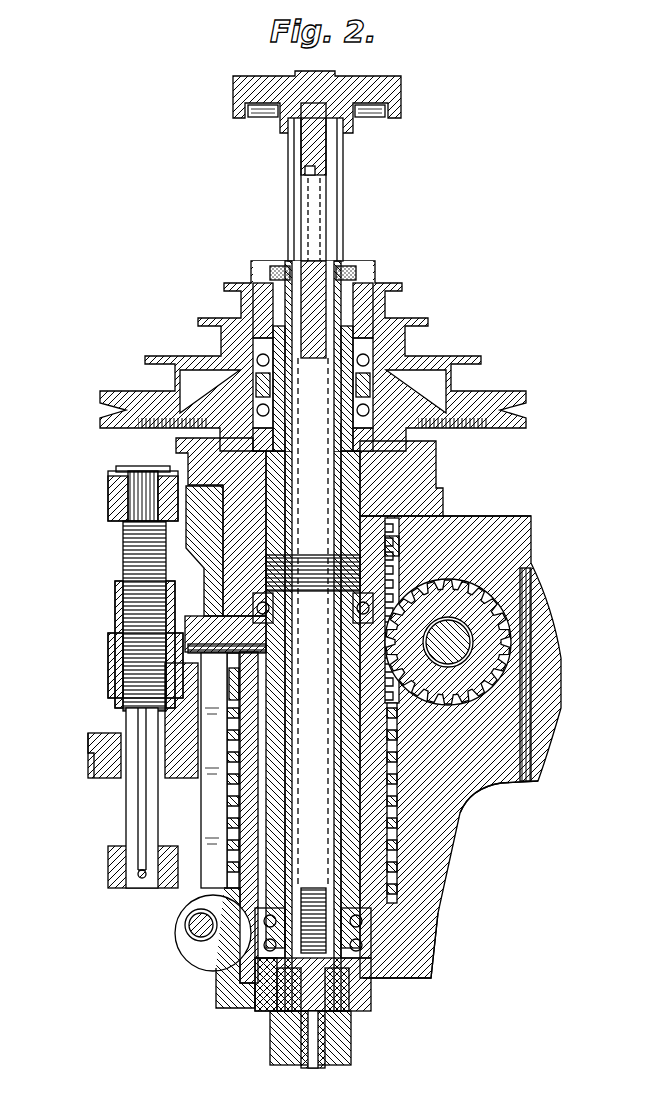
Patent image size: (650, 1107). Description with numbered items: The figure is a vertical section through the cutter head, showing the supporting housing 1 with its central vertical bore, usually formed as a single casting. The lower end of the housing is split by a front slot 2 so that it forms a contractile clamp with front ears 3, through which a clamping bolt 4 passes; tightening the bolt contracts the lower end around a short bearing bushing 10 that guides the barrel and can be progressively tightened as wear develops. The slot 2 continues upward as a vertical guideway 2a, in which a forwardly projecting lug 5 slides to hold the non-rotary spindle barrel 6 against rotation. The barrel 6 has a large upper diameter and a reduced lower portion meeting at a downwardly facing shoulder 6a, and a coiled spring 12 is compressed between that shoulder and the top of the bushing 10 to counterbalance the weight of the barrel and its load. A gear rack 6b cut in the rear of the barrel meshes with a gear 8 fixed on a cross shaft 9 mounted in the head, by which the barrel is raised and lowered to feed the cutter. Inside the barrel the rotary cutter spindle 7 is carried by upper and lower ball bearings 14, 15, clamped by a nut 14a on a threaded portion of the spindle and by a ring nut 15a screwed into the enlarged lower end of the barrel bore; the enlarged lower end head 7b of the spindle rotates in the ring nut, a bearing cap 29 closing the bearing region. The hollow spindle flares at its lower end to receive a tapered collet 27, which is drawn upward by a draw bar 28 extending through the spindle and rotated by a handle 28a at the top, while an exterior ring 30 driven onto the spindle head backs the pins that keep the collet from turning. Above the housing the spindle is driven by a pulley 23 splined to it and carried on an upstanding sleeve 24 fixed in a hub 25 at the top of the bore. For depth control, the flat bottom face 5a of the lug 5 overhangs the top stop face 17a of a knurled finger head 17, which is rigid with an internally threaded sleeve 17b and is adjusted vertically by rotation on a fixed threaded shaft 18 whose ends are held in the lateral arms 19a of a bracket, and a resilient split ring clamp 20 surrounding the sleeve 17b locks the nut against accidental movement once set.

The supporting housing 1 is at (452, 815).
The front slot 2 is at (208, 958).
The vertical guideway 2a is at (205, 792).
The front ears 3 is at (182, 920).
The clamping bolt 4 is at (188, 930).
The lug 5 is at (178, 603).
The abutment stop face 5a is at (200, 660).
The spindle barrel 6 is at (240, 820).
The annular shoulder 6a is at (492, 777).
The gear rack 6b is at (385, 538).
The rotary cutter spindle 7 is at (334, 198).
The lower end head 7b is at (268, 1022).
The gear 8 is at (470, 658).
The cross shaft 9 is at (448, 652).
The bearing bushing 10 is at (395, 908).
The coiled spring 12 is at (390, 738).
The upper ball bearings 14 is at (256, 610).
The nut 14a is at (440, 513).
The lower ball bearings 15 is at (362, 936).
The ring nut 15a is at (365, 1000).
The stop member 17 is at (95, 770).
The top abutment stop face 17a is at (92, 724).
The internally threaded sleeve 17b is at (108, 592).
The threaded shaft 18 is at (126, 794).
The lateral arms 19a is at (108, 502).
The split ring clamp 20 is at (100, 648).
The drive pulley 23 is at (462, 384).
The upstanding sleeve 24 is at (338, 396).
The hub 25 is at (420, 459).
The collet 27 is at (320, 1062).
The draw bar 28 is at (314, 136).
The handle 28a is at (237, 98).
The bearing cap 29 is at (258, 1000).
The exterior ring 30 is at (343, 1025).